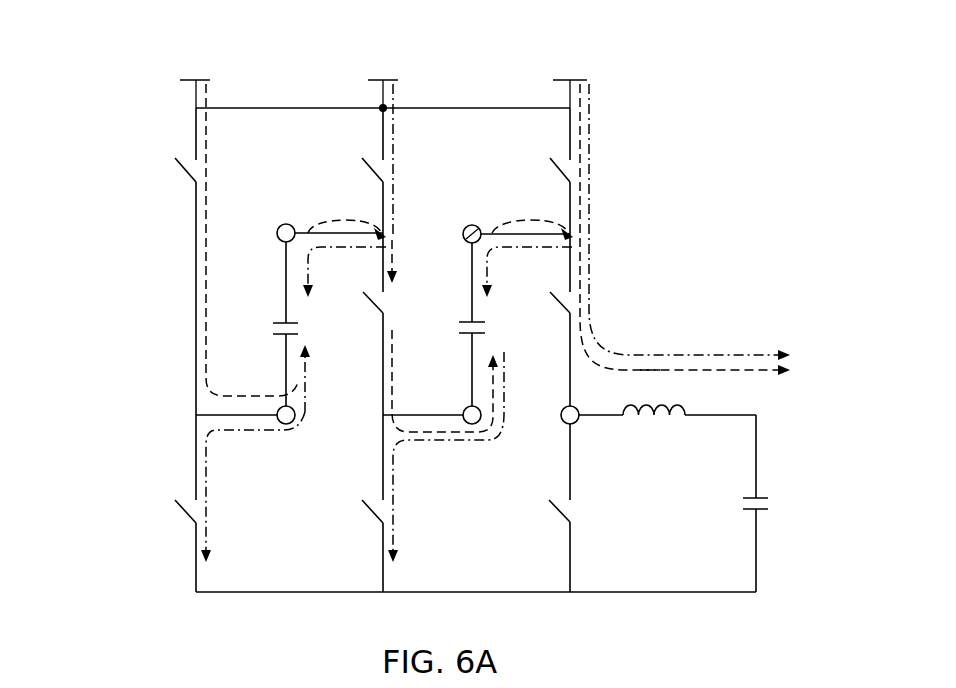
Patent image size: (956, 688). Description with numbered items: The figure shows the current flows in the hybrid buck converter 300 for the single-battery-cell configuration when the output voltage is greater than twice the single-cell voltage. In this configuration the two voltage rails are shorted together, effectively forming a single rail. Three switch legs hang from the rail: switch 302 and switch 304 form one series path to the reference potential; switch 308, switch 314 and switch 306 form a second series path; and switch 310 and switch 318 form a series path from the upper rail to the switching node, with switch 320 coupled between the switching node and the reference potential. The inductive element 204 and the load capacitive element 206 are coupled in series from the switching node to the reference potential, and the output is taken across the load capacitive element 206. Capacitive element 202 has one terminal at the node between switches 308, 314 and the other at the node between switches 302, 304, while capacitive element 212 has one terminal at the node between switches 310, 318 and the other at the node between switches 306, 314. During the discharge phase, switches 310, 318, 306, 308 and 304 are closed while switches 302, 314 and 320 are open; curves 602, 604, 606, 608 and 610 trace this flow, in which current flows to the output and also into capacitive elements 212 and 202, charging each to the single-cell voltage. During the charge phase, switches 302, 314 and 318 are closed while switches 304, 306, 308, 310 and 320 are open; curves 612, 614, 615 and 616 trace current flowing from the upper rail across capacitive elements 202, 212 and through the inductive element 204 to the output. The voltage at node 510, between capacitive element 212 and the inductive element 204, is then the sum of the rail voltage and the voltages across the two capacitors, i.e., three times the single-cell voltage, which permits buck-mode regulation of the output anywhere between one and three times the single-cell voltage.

The hybrid buck converter 300 is at (124, 26).
The switch P1 302 is at (193, 181).
The switch N1 304 is at (184, 510).
The switch N2 306 is at (372, 510).
The switch P2 308 is at (380, 181).
The switch P3 310 is at (566, 181).
The switch P2C 314 is at (371, 305).
The switch P3C 318 is at (556, 305).
The switch N3 320 is at (558, 510).
The capacitive element C1 202 is at (278, 337).
The capacitive element C2 212 is at (465, 320).
The inductive element 204 is at (683, 405).
The load capacitive element 206 is at (762, 496).
The node 510 is at (470, 232).
The curve 602 is at (583, 107).
The curve 604 is at (592, 145).
The curve 606 is at (399, 143).
The curve 608 is at (396, 485).
The curve 610 is at (208, 485).
The curve 612 is at (205, 272).
The curve 614 is at (305, 275).
The curve 615 is at (391, 383).
The curve 616 is at (645, 370).